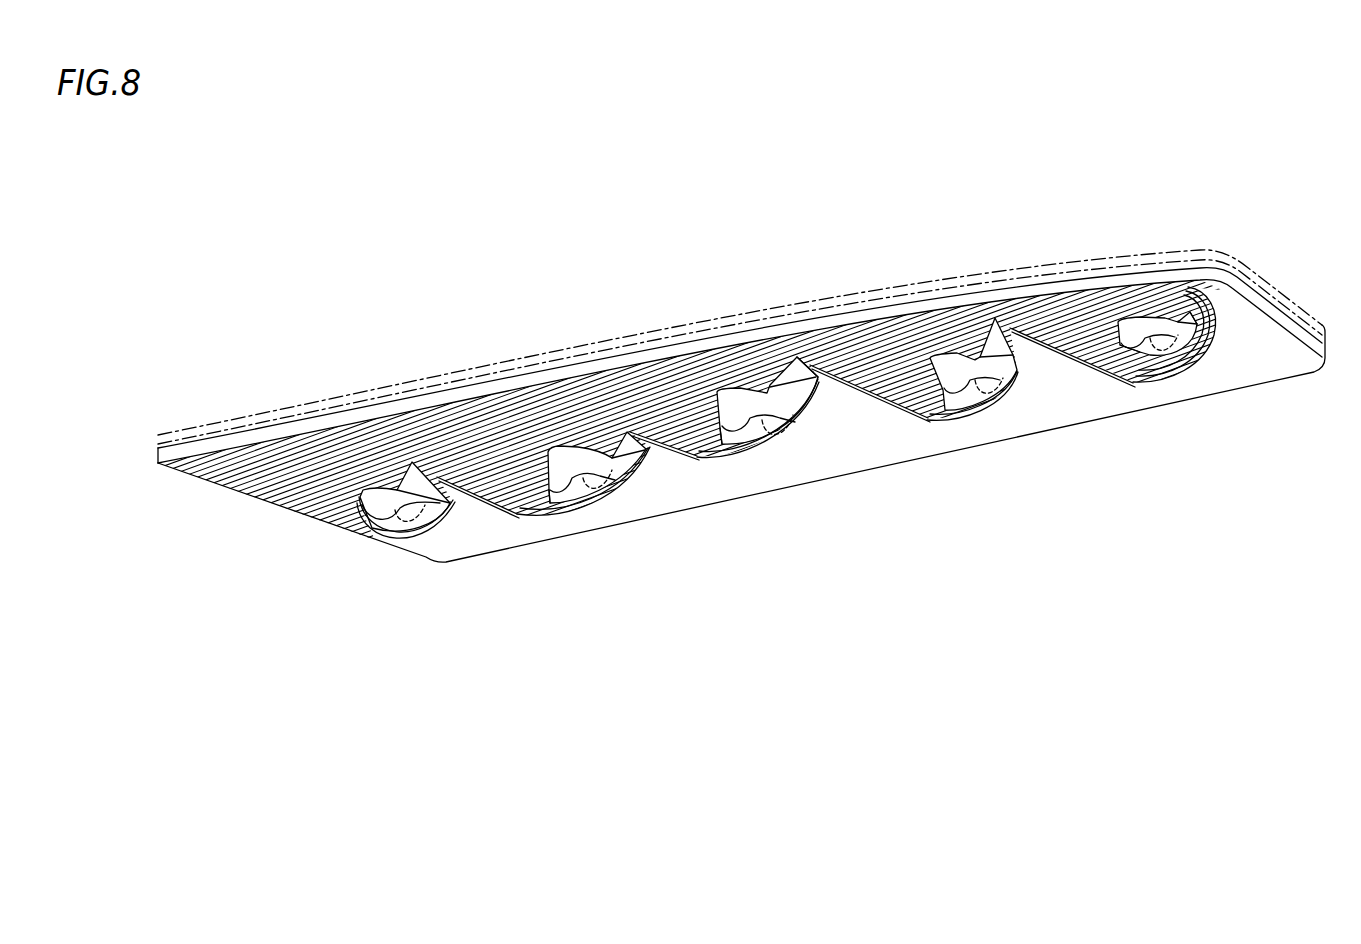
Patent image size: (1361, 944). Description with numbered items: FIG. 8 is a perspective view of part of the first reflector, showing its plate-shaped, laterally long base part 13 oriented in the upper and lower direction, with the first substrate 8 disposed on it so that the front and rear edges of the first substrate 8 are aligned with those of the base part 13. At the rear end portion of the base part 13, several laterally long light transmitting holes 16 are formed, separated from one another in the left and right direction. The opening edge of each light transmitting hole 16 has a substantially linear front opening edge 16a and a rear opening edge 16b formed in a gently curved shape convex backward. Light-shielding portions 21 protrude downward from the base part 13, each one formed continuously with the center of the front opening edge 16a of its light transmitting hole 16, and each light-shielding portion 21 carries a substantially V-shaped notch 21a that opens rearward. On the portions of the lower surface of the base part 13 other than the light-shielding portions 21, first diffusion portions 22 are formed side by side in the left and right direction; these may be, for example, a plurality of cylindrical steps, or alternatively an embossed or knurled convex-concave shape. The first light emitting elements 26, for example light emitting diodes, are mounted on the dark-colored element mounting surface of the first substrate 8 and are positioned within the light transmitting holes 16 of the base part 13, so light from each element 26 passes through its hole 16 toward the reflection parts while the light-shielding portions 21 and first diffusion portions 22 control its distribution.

The first substrate 8 is at (972, 272).
The base part 13 is at (862, 455).
The light transmitting hole 16 is at (445, 498).
The front opening edge 16a is at (765, 425).
The rear opening edge 16b is at (818, 400).
The light-shielding portion 21 is at (392, 502).
The notch 21a is at (735, 440).
The first diffusion portion 22 is at (288, 456).
The first light emitting element 26 is at (452, 503).